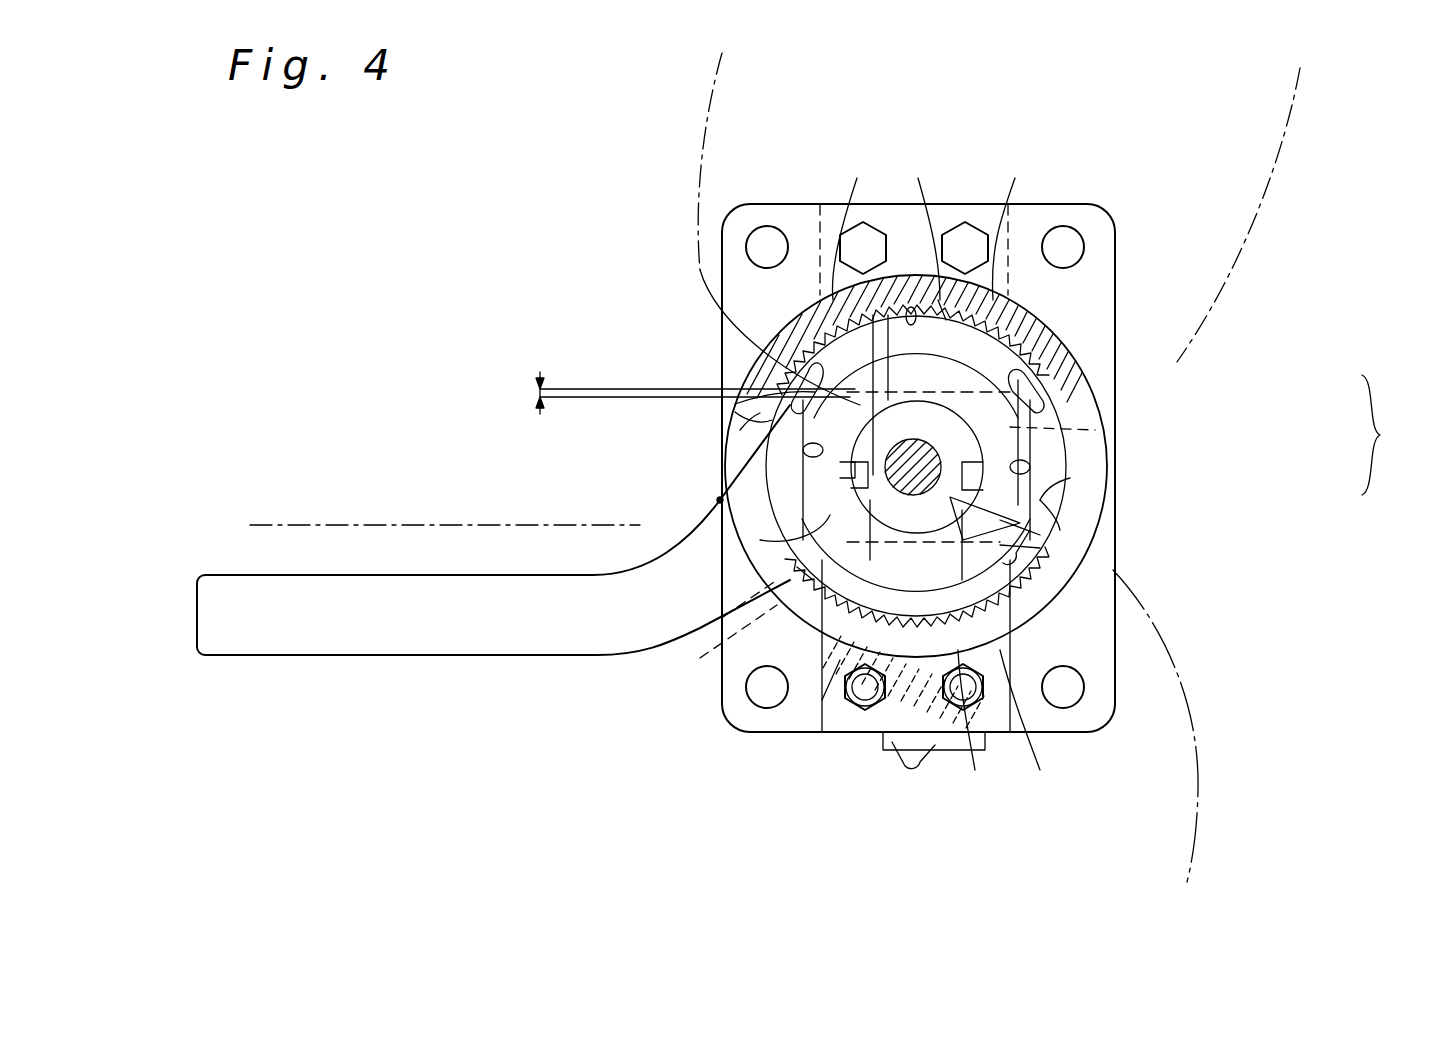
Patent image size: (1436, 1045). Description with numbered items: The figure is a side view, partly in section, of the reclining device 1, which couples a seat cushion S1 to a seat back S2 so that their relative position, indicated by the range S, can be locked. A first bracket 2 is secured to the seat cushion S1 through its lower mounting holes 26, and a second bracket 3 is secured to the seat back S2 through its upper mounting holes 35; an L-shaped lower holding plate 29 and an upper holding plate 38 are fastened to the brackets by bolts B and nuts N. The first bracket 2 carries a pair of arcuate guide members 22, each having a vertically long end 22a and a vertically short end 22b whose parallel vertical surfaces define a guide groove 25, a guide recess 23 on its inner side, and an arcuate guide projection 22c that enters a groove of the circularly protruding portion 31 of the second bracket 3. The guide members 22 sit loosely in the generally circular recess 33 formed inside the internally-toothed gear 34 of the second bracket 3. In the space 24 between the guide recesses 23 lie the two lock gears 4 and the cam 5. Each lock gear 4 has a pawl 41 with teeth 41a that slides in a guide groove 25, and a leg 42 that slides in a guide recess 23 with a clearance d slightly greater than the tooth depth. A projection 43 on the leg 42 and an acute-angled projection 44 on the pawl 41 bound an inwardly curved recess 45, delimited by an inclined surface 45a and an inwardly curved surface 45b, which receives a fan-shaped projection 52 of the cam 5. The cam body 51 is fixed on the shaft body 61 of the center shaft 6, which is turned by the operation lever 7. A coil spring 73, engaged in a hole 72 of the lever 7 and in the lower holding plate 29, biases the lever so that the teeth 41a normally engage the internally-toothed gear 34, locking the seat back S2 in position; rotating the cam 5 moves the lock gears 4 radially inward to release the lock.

The reclining device 1 is at (1112, 208).
The first bracket 2 is at (744, 658).
The second bracket 3 is at (760, 344).
The lock gear 4 is at (872, 360).
The cam 5 is at (1020, 420).
The center shaft 6 is at (1040, 430).
The operation lever 7 is at (417, 622).
The guide member 22 is at (790, 468).
The vertically long end 22a is at (800, 382).
The vertically short end 22b is at (1062, 325).
The guide projection 22c is at (943, 395).
The guide recess 23 is at (805, 450).
The space 24 is at (1060, 500).
The guide groove 25 is at (855, 300).
The mounting hole 26 is at (765, 690).
The lower holding plate 29 is at (822, 700).
The circularly protruding portion 31 is at (740, 430).
The generally circular recess 33 is at (998, 360).
The internally-toothed gear 34 is at (854, 222).
The mounting hole 35 is at (767, 245).
The upper holding plate 38 is at (832, 210).
The pawl 41 is at (1027, 475).
The teeth 41a is at (951, 474).
The leg 42 is at (760, 540).
The projection 43 is at (868, 446).
The acute-angled projection 44 is at (928, 449).
The inwardly curved recess 45 is at (1030, 392).
The inclined surface 45a is at (1000, 520).
The inwardly curved surface 45b is at (1000, 545).
The cam body 51 is at (910, 306).
The fan-shaped projection 52 is at (944, 300).
The shaft body 61 is at (718, 501).
The hole 72 is at (700, 658).
The coil spring 73 is at (908, 760).
The bolt B is at (968, 240).
The nut N is at (850, 700).
The clearance d is at (666, 393).
The lever stroke range S is at (1380, 435).
The seat cushion S1 is at (1185, 677).
The seat back S2 is at (1210, 307).